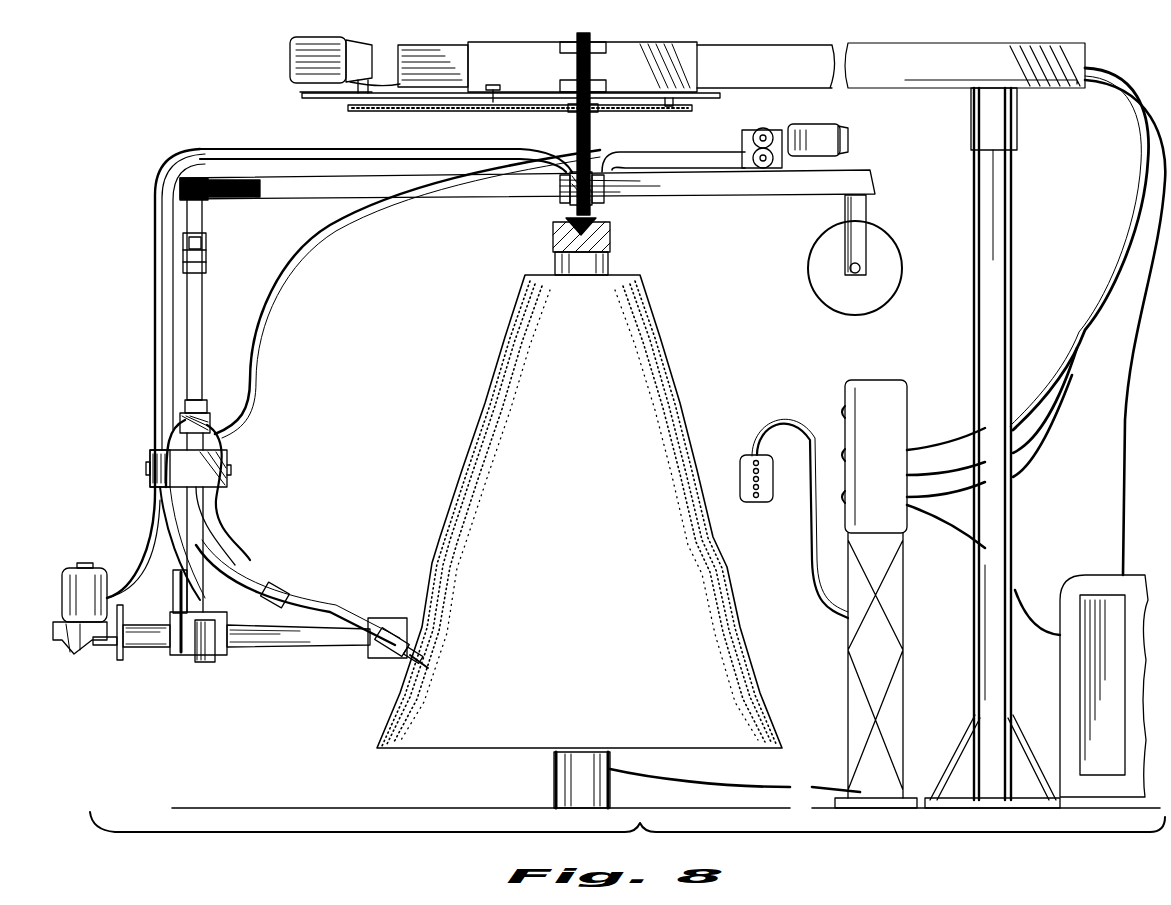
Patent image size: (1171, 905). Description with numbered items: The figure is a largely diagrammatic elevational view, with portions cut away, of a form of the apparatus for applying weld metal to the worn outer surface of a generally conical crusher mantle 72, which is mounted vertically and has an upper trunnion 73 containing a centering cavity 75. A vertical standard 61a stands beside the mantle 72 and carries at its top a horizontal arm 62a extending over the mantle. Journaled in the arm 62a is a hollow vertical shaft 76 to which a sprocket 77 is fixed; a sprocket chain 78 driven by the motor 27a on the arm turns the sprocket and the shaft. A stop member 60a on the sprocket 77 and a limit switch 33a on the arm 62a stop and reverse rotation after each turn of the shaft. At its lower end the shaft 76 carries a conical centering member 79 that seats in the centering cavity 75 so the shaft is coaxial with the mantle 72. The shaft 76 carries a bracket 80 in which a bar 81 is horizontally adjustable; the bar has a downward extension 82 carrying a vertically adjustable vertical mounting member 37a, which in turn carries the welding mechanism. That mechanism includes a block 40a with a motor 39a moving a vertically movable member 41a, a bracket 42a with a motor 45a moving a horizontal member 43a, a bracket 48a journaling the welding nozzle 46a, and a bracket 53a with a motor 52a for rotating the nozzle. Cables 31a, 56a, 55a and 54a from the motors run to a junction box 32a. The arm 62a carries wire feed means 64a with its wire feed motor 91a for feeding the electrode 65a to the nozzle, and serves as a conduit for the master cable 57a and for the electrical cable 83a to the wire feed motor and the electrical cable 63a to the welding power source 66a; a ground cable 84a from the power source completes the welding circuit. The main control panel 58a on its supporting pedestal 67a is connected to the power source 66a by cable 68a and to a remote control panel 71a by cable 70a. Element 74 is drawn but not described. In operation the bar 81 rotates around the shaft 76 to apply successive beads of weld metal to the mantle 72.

The motor 27a is at (336, 38).
The electric cable 31a is at (300, 92).
The limit switch 33a is at (492, 85).
The stop member 60a is at (690, 98).
The horizontal arm 62a is at (975, 44).
The electrical cable 63a is at (295, 148).
The sprocket chain 78 is at (405, 111).
The hollow vertical shaft 76 is at (592, 128).
The sprocket 77 is at (670, 108).
The wire feed means 64a is at (772, 132).
The wire feed motor 91a is at (850, 138).
The downward extension 82 is at (207, 236).
The bracket 80 is at (560, 206).
The conical centering member 79 is at (596, 218).
The centering cavity 75 is at (553, 240).
The upper trunnion 73 is at (608, 262).
The electrical cable 83a is at (680, 172).
The bar 81 is at (750, 196).
The electrode 65a is at (424, 668).
The vertical mounting member 37a is at (205, 325).
The master cable 57a is at (256, 330).
The crusher mantle 72 is at (672, 346).
The vertical standard 61a is at (975, 340).
The main control panel 58a is at (872, 380).
The electric cable 56a is at (163, 430).
The junction box 32a is at (212, 430).
The electric cable 70a is at (770, 430).
The electric motor 39a is at (150, 484).
The block 40a is at (230, 486).
The electric cable 55a is at (222, 545).
The remote control panel 71a is at (756, 502).
The electric cable 54a is at (142, 580).
The vertically movable member 41a is at (210, 548).
The cable 68a is at (950, 524).
The electric motor 52a is at (62, 598).
The bracket 48a is at (370, 618).
The welding nozzle 46a is at (408, 640).
The welding power source 66a is at (1060, 592).
The electric motor 45a is at (173, 592).
The bracket 53a is at (56, 632).
The bracket 42a is at (222, 657).
The horizontal member 43a is at (296, 648).
The supporting pedestal 67a is at (905, 625).
The base post 74 is at (554, 768).
The ground cable 84a is at (786, 788).